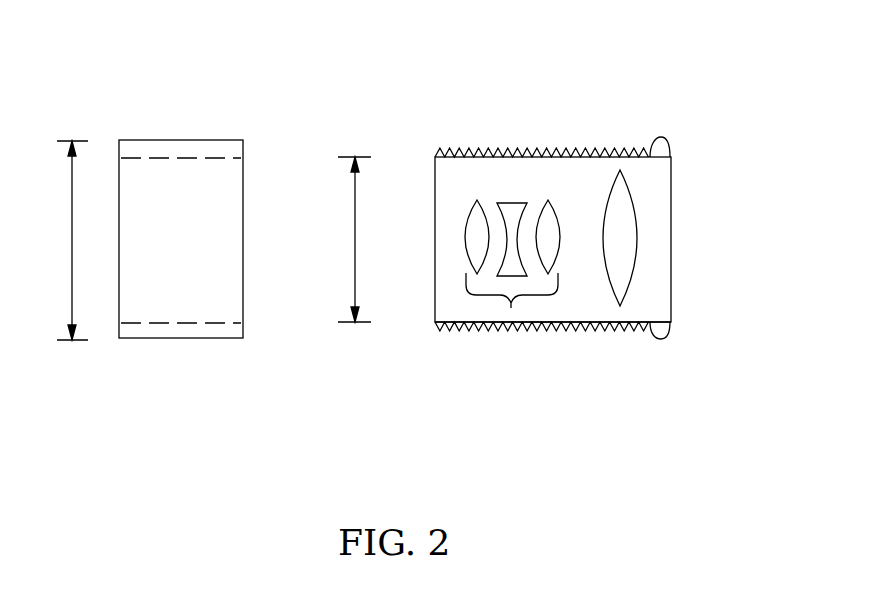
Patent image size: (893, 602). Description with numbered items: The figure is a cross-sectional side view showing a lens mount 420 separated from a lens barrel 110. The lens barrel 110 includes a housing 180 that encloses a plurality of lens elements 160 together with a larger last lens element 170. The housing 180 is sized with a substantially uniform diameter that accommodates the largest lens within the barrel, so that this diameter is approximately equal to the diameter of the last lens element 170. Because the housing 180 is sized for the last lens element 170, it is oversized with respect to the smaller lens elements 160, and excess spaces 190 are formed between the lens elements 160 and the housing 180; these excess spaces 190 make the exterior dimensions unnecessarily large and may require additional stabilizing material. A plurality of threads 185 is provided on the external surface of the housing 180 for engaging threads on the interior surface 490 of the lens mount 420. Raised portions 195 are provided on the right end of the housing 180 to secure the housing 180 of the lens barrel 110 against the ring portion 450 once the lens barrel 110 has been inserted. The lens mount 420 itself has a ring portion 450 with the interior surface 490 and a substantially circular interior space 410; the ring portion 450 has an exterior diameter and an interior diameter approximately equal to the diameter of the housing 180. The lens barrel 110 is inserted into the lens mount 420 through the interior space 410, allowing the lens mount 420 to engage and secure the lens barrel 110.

The lens barrel 110 is at (544, 238).
The lens elements 160 is at (512, 310).
The last lens element 170 is at (622, 170).
The housing 180 is at (625, 331).
The threads 185 is at (475, 142).
The excess spaces 190 is at (521, 190).
The raised portions 195 is at (660, 137).
The interior space 410 is at (145, 290).
The lens mount 420 is at (137, 231).
The ring portion 450 is at (207, 147).
The interior surface 490 is at (212, 315).